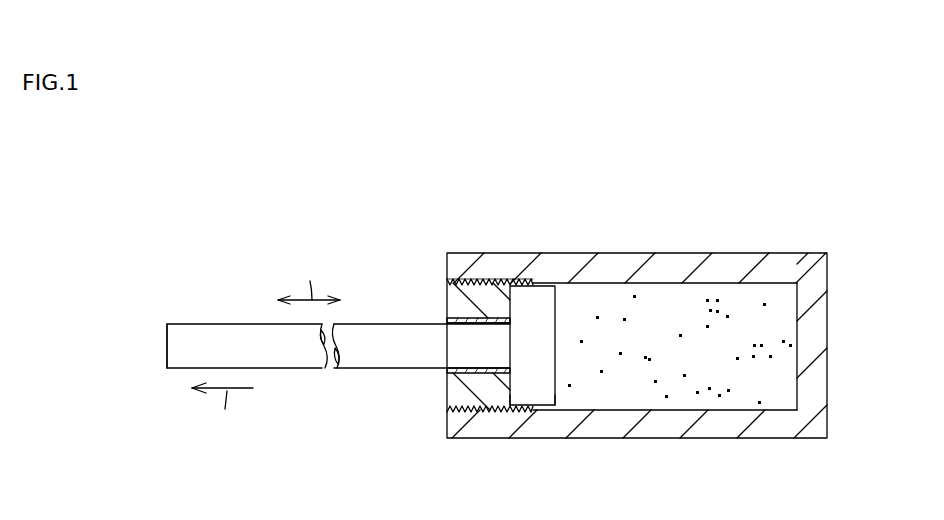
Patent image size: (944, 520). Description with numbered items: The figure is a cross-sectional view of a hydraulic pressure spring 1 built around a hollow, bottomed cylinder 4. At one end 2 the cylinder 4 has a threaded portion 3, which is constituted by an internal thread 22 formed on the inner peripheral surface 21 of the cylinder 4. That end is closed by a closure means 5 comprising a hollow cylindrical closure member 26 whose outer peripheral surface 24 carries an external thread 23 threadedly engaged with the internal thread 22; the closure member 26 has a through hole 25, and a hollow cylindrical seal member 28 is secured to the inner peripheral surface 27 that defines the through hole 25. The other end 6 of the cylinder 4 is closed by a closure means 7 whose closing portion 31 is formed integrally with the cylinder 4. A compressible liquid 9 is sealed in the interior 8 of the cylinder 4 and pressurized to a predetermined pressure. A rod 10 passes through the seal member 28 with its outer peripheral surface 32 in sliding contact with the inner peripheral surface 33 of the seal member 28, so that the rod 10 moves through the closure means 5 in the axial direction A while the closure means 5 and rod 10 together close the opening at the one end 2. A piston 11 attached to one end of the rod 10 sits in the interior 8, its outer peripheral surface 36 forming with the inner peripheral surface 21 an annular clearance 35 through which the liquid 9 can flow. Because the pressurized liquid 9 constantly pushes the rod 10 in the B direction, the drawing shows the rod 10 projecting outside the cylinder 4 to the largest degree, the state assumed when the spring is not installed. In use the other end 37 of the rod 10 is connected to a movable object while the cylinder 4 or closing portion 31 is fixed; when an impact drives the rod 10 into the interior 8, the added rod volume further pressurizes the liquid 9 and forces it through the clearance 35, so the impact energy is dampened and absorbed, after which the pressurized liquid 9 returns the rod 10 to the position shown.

The hydraulic pressure spring 1 is at (403, 231).
The one end 2 is at (494, 278).
The threaded portion 3 is at (460, 418).
The cylinder 4 is at (703, 438).
The closure means 5 is at (486, 410).
The other end 6 is at (797, 262).
The closure means 7 is at (831, 350).
The interior 8 is at (668, 290).
The compressible liquid 9 is at (747, 380).
The rod 10 is at (272, 366).
The piston 11 is at (542, 300).
The inner peripheral surface 21 is at (621, 406).
The internal thread 22 is at (522, 410).
The external thread 23 is at (511, 280).
The outer peripheral surface 24 is at (456, 280).
The through hole 25 is at (473, 321).
The closure member 26 is at (455, 397).
The inner peripheral surface 27 is at (468, 328).
The seal member 28 is at (463, 316).
The closing portion 31 is at (817, 328).
The outer peripheral surface 32 is at (309, 368).
The inner peripheral surface 33 is at (467, 362).
The annular clearance 35 is at (553, 407).
The outer peripheral surface 36 is at (541, 286).
The other end 37 is at (196, 330).